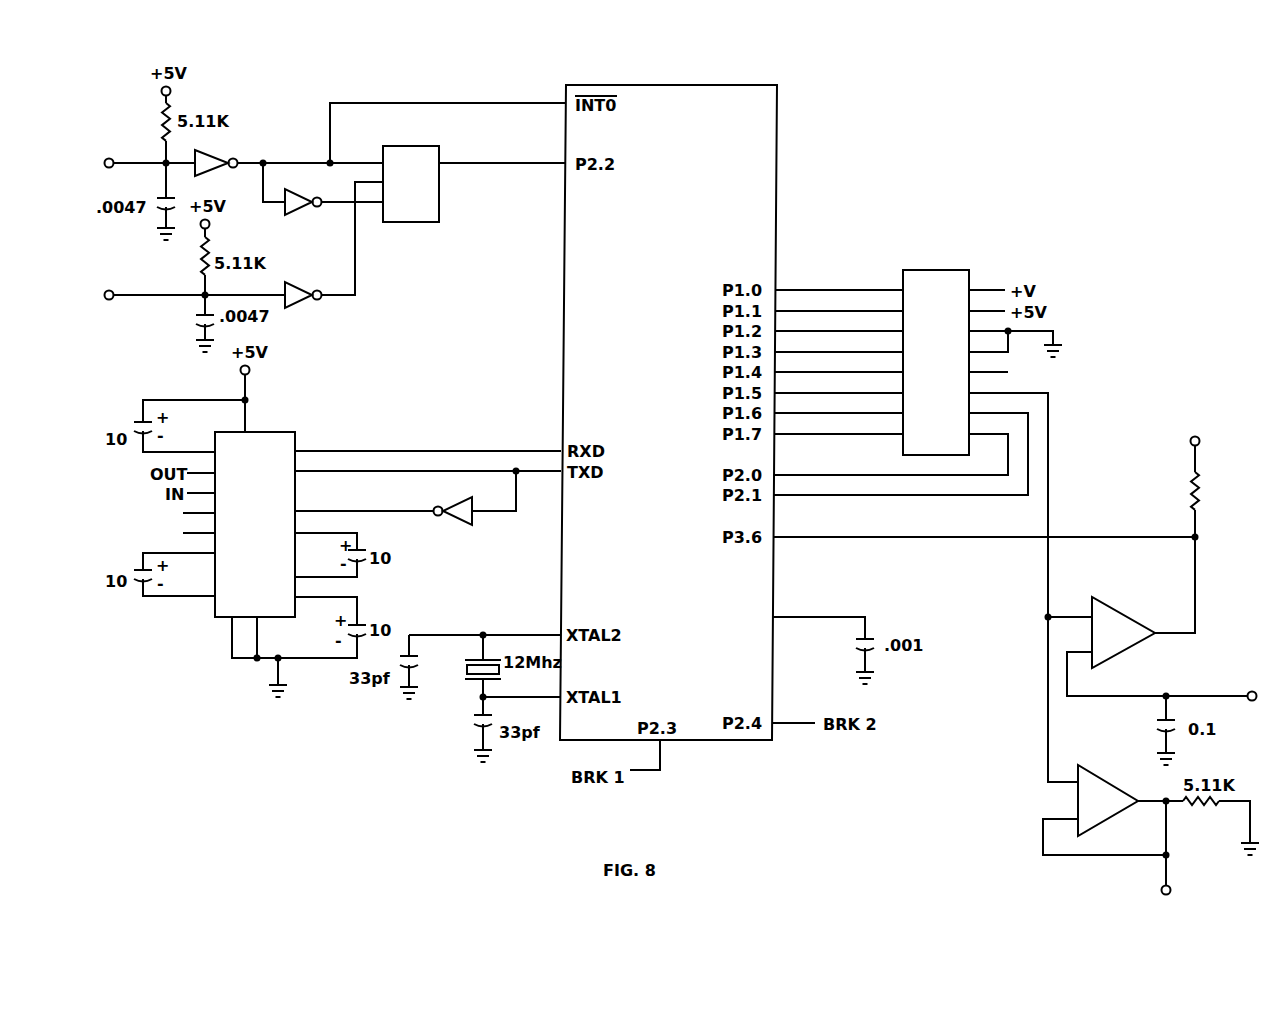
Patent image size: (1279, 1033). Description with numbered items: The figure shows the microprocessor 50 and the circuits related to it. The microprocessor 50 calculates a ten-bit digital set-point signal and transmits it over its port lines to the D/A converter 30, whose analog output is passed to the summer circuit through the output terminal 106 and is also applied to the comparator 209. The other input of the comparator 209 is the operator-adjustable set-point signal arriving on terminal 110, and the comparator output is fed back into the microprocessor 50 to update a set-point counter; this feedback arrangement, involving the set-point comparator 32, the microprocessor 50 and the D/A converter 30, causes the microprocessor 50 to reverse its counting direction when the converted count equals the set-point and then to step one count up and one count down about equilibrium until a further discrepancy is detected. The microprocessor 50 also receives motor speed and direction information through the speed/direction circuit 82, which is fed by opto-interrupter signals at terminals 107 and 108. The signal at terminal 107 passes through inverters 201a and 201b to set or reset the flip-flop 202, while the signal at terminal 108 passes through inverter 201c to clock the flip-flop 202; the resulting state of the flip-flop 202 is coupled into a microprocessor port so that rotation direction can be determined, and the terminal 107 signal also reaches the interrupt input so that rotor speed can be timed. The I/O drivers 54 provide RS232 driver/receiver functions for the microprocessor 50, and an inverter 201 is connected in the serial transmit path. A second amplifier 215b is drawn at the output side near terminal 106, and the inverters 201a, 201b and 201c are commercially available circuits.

The microprocessor 50 is at (870, 117).
The D/A converter 30 is at (928, 213).
The set-point comparator 32 is at (1094, 518).
The I/O drivers 54 is at (314, 710).
The speed/direction circuit 82 is at (385, 238).
The output terminal 106 is at (1171, 888).
The terminal 107 is at (109, 158).
The terminal 108 is at (109, 300).
The terminal 110 is at (1249, 690).
The inverter 201 is at (462, 518).
The inverter 201a is at (214, 157).
The inverter 201b is at (296, 211).
The inverter 201c is at (300, 306).
The flip-flop 202 is at (404, 146).
The comparator 209 is at (1123, 632).
The operational amplifier 215b is at (1108, 800).